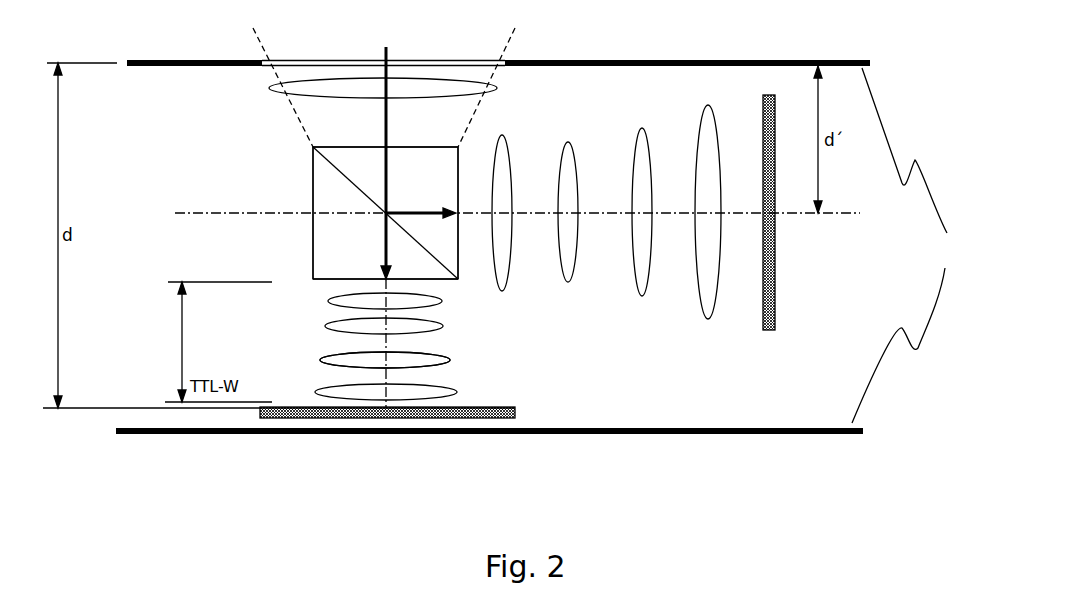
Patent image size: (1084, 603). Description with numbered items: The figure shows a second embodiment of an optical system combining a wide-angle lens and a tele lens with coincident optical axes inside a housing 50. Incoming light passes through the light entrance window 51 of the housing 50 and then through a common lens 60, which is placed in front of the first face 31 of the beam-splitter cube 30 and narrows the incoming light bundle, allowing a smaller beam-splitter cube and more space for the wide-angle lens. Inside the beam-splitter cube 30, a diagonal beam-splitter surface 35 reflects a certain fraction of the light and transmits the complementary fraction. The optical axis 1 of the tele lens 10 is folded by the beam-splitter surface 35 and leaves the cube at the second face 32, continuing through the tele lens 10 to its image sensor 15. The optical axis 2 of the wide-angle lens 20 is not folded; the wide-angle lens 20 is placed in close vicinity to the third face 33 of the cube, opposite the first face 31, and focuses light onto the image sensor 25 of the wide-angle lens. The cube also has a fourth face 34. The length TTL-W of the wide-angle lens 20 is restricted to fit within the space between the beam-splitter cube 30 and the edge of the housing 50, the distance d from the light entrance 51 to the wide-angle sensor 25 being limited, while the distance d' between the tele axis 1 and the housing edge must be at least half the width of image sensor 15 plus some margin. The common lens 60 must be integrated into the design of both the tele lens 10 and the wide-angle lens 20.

The optical axis of the tele lens 1 is at (663, 215).
The optical axis of wide-angle lens 2 is at (443, 378).
The tele lens 10 is at (496, 110).
The image sensor of tele lens 15 is at (772, 332).
The wide-angle lens 20 is at (300, 282).
The image sensor of wide-angle lens 25 is at (515, 413).
The beam-splitter cube 30 is at (385, 213).
The first face of beam-splitter cube 31 is at (340, 143).
The second face of beam-splitter cube 32 is at (458, 262).
The third face of beam-splitter cube 33 is at (443, 290).
The fourth face of beam-splitter cube 34 is at (310, 243).
The beam-splitter surface 35 is at (337, 172).
The housing 50 is at (537, 246).
The light entrance window 51 is at (268, 88).
The common lens 60 is at (462, 97).